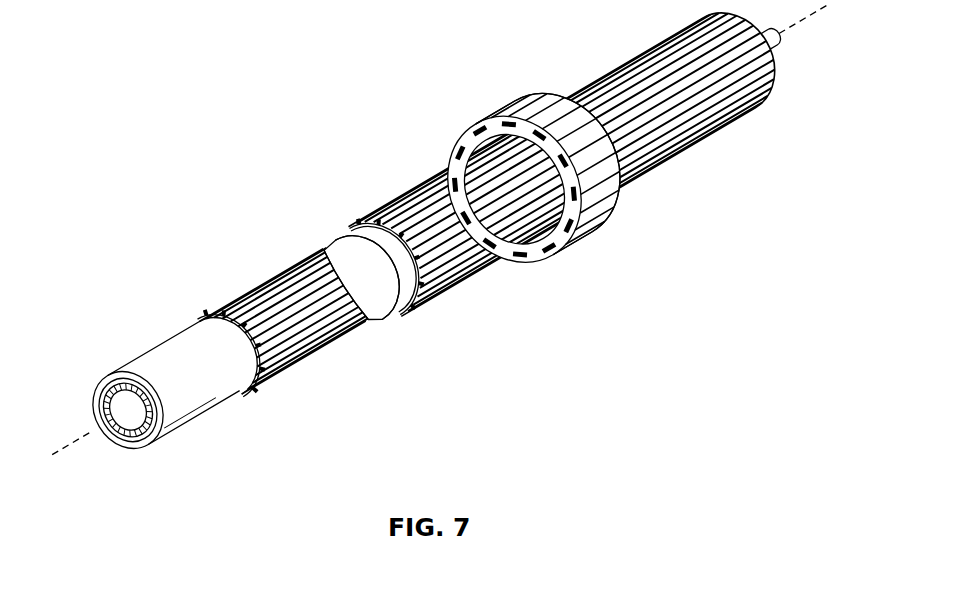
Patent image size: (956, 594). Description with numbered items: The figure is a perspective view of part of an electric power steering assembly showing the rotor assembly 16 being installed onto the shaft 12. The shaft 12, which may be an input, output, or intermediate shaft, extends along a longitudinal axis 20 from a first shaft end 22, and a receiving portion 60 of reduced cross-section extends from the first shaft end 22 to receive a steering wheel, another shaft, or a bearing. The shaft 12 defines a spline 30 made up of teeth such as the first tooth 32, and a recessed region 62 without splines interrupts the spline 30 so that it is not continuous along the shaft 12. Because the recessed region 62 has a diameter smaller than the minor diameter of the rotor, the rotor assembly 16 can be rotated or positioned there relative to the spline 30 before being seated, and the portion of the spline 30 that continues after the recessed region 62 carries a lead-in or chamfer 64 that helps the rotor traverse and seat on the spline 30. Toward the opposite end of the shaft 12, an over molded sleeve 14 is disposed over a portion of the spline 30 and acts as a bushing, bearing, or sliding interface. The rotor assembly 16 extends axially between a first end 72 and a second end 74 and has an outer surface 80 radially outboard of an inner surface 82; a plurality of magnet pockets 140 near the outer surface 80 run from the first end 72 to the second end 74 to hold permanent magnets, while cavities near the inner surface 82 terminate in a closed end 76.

The shaft 12 is at (435, 242).
The sleeve 14 is at (680, 162).
The rotor assembly 16 is at (437, 76).
The longitudinal axis 20 is at (72, 466).
The first shaft end 22 is at (196, 322).
The spline 30 is at (302, 377).
The first tooth 32 is at (252, 290).
The receiving portion 60 is at (110, 365).
The recessed region 62 is at (322, 243).
The chamfer 64 is at (320, 252).
The first end 72 is at (534, 276).
The second end 74 is at (614, 206).
The closed end 76 is at (458, 147).
The outer surface 80 is at (524, 90).
The inner surface 82 is at (562, 262).
The magnet pockets 140 is at (478, 110).